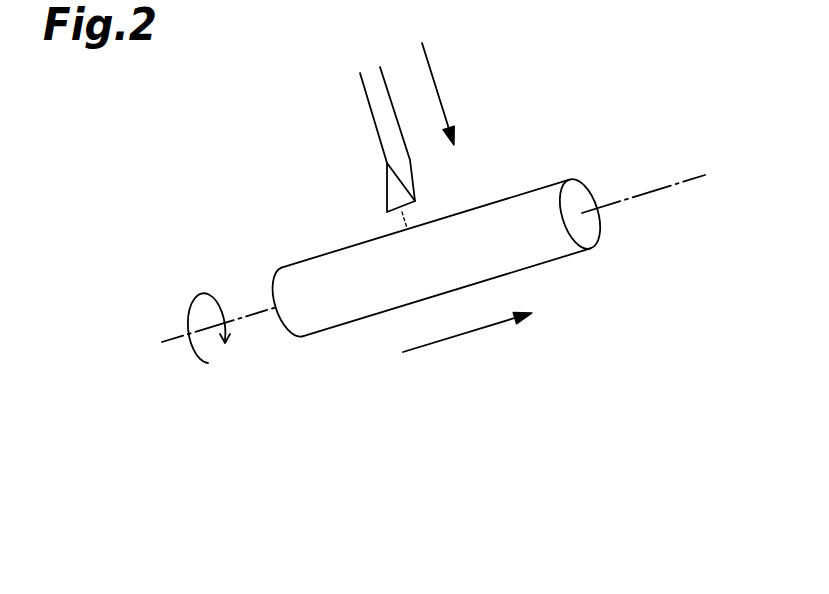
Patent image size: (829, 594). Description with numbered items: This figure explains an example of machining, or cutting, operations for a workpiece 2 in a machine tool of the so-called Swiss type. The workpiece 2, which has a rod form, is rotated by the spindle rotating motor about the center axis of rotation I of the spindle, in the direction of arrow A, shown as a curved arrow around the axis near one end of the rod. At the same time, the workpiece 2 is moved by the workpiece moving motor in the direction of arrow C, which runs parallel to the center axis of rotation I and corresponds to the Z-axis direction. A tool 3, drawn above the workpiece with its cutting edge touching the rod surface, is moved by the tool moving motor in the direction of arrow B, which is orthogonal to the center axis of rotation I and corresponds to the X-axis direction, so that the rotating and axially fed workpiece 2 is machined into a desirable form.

The workpiece 2 is at (538, 253).
The tool 3 is at (388, 130).
The direction of arrow A is at (210, 298).
The direction of arrow B is at (433, 75).
The direction of arrow C is at (422, 350).
The center axis of rotation I is at (670, 187).